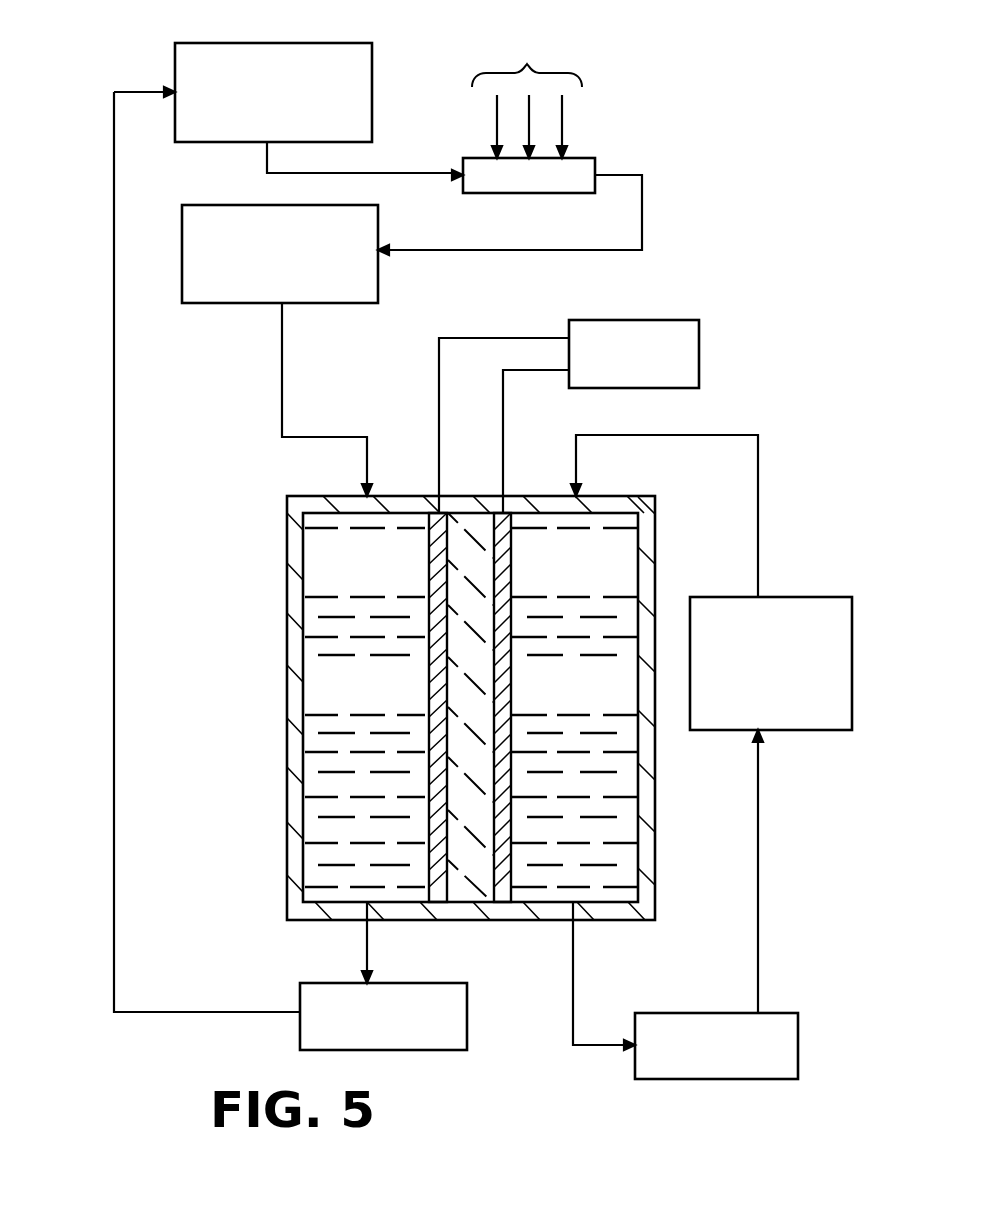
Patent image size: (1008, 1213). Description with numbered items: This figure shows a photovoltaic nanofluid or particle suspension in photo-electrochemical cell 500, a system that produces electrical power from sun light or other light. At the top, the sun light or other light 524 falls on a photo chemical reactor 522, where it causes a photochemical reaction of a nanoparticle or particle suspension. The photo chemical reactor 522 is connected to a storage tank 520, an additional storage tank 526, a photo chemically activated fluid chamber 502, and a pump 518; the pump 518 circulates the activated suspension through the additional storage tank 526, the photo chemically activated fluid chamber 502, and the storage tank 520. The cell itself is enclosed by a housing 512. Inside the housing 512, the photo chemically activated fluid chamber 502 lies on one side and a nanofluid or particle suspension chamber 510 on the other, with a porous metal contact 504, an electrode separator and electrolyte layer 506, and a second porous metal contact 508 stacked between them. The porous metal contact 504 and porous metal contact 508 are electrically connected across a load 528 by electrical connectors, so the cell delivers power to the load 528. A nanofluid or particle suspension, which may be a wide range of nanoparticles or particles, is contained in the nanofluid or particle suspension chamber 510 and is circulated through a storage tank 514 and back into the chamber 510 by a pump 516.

The photovoltaic nanofluid or particle suspension in photo-electrochemical cell 500 is at (700, 92).
The photo chemically activated fluid chamber 502 is at (393, 575).
The porous metal contact 504 is at (429, 690).
The electrode separator and electrolyte layer 506 is at (480, 870).
The porous metal contact 508 is at (511, 695).
The nanofluid or particle suspension chamber 510 is at (600, 575).
The housing 512 is at (655, 540).
The storage tank 514 is at (785, 597).
The pump 516 is at (718, 978).
The pump 518 is at (327, 983).
The storage tank 520 is at (372, 68).
The photo chemical reactor 522 is at (597, 163).
The light source 524 is at (527, 92).
The additional storage tank 526 is at (378, 277).
The load 528 is at (699, 340).